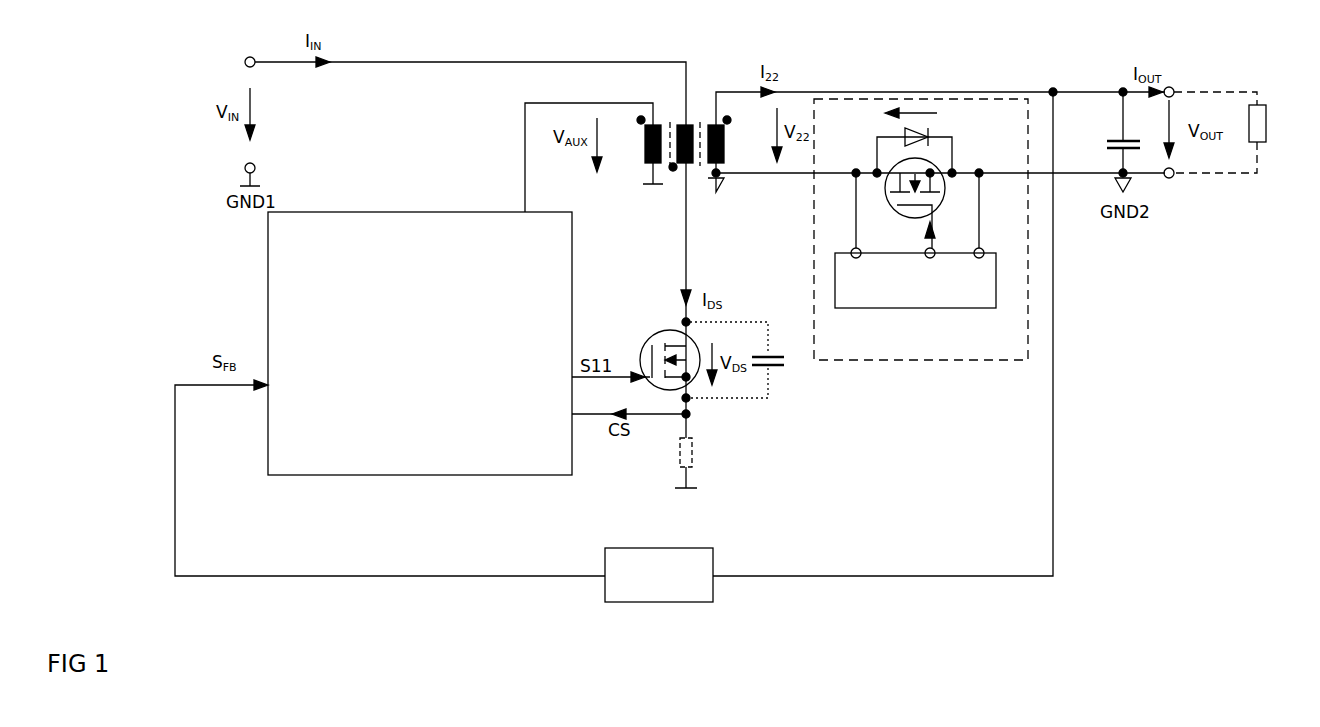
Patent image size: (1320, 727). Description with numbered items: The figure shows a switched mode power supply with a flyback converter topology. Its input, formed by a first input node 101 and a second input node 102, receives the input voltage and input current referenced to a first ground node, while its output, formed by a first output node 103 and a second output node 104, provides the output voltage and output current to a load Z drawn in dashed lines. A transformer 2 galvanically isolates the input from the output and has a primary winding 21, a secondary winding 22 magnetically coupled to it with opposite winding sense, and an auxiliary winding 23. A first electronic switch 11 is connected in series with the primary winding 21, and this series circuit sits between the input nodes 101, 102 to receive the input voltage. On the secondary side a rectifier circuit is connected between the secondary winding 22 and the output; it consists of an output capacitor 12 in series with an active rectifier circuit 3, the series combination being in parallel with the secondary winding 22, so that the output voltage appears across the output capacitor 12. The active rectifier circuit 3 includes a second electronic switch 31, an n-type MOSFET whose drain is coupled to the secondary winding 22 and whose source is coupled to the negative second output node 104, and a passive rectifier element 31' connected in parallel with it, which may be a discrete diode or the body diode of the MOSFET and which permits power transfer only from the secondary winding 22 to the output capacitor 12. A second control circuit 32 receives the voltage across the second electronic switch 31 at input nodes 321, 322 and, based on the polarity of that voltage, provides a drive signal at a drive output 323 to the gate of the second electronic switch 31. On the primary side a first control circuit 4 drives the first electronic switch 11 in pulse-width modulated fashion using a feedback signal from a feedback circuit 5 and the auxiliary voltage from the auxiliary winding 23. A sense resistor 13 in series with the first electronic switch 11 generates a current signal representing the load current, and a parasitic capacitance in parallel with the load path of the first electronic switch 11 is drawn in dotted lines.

The first input node 101 is at (246, 58).
The second input node 102 is at (246, 164).
The first output node 103 is at (1175, 88).
The second output node 104 is at (1175, 178).
The transformer 2 is at (890, 122).
The primary winding 21 is at (679, 120).
The secondary winding 22 is at (726, 150).
The auxiliary winding 23 is at (645, 160).
The active rectifier circuit 3 is at (945, 362).
The first control circuit 4 is at (267, 305).
The feedback circuit 5 is at (715, 564).
The first electronic switch 11 is at (648, 340).
The output capacitor 12 is at (1105, 144).
The sense resistor 13 is at (700, 456).
The second electronic switch 31 is at (932, 193).
The passive rectifier element 31' is at (934, 138).
The second control circuit 32 is at (912, 309).
The input node 321 is at (853, 248).
The input node 322 is at (984, 249).
The drive output 323 is at (936, 249).
The load Z is at (1267, 128).